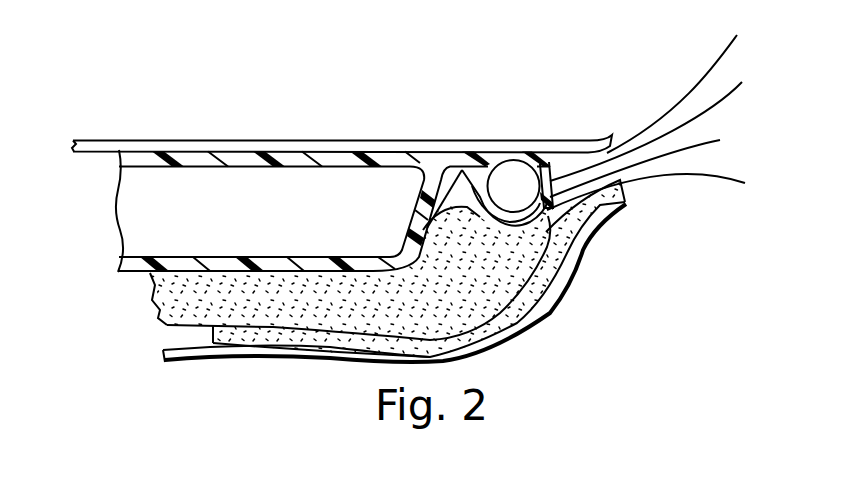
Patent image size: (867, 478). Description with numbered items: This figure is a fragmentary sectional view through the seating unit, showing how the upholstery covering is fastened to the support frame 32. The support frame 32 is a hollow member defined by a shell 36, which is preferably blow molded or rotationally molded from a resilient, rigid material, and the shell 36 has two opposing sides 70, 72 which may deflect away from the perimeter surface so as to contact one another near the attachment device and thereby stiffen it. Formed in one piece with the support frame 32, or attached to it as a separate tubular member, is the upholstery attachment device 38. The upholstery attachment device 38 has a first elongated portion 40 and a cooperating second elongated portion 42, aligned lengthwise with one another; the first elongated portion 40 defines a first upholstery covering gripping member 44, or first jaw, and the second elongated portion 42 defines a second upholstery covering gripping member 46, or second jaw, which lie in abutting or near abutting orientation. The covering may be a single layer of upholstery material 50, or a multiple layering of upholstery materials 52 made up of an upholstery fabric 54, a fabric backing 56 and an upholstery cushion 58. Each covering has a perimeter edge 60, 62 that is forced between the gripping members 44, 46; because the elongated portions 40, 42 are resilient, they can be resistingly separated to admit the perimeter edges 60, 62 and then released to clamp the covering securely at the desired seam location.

The support frame 32 is at (336, 174).
The shell 36 is at (118, 230).
The upholstery attachment device 38 is at (531, 151).
The first elongated portion 40 is at (735, 90).
The second elongated portion 42 is at (710, 142).
The first upholstery covering gripping member 44 is at (488, 160).
The second upholstery covering gripping member 46 is at (738, 181).
The upholstery material 50 is at (583, 141).
The multiple layering of upholstery materials 52 is at (507, 337).
The upholstery material or fabric 54 is at (605, 220).
The fabric backing 56 is at (658, 209).
The upholstery cushion 58 is at (517, 293).
The perimeter edge 60 is at (730, 45).
The perimeter edge 62 is at (625, 192).
The side 70 is at (380, 170).
The side 72 is at (373, 258).